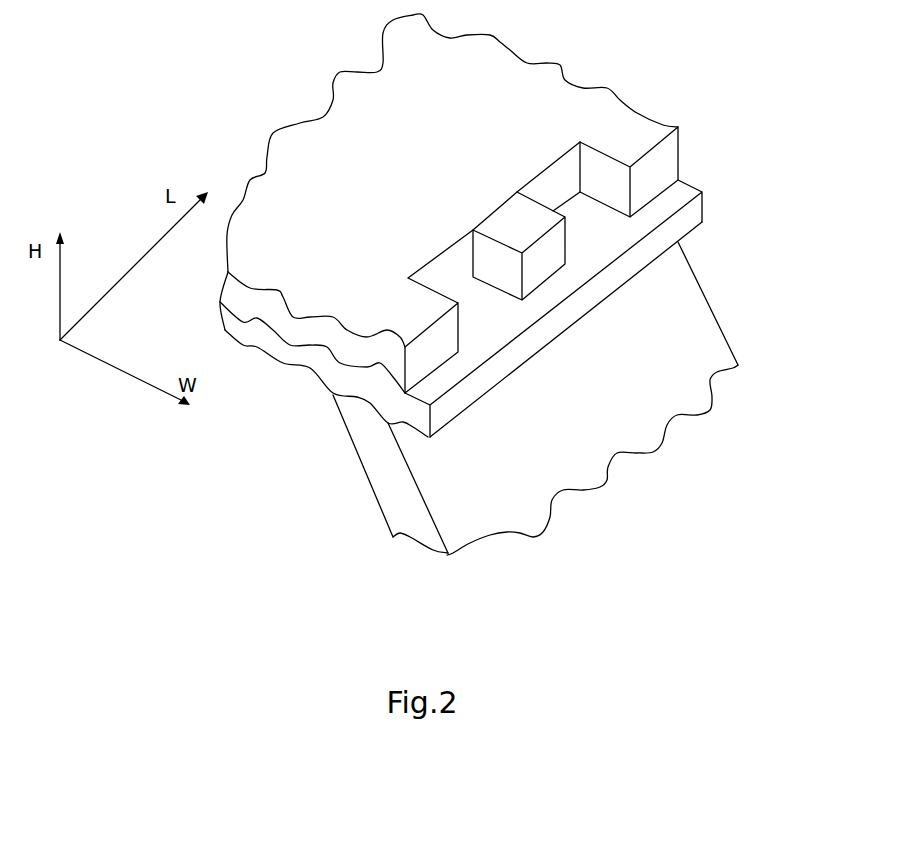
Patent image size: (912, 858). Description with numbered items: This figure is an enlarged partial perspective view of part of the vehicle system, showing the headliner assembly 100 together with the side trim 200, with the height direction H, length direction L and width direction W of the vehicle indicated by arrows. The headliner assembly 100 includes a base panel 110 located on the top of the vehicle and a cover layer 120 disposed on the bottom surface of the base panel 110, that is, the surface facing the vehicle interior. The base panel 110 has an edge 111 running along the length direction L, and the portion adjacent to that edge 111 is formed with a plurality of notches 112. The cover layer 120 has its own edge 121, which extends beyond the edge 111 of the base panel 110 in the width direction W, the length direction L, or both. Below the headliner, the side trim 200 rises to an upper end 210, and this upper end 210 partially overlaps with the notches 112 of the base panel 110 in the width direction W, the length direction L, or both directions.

The headliner assembly 100 is at (329, 90).
The base panel 110 is at (528, 83).
The edge 111 is at (657, 143).
The notches 112 is at (465, 297).
The cover layer 120 is at (493, 333).
The edge 121 is at (633, 277).
The side trim 200 is at (710, 348).
The upper end 210 is at (357, 409).